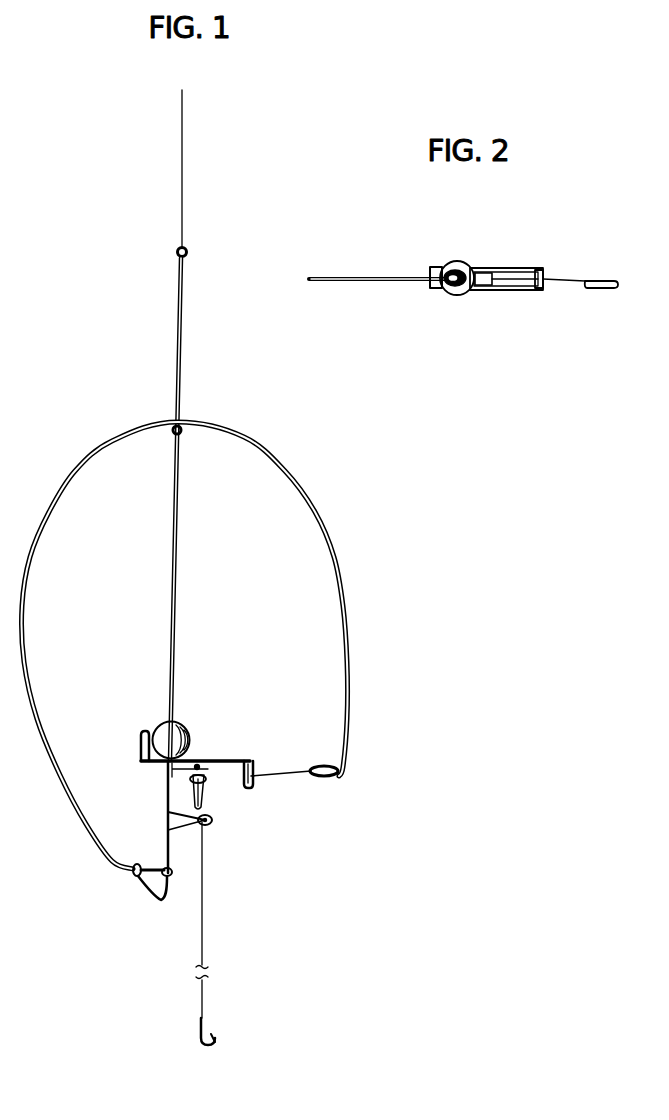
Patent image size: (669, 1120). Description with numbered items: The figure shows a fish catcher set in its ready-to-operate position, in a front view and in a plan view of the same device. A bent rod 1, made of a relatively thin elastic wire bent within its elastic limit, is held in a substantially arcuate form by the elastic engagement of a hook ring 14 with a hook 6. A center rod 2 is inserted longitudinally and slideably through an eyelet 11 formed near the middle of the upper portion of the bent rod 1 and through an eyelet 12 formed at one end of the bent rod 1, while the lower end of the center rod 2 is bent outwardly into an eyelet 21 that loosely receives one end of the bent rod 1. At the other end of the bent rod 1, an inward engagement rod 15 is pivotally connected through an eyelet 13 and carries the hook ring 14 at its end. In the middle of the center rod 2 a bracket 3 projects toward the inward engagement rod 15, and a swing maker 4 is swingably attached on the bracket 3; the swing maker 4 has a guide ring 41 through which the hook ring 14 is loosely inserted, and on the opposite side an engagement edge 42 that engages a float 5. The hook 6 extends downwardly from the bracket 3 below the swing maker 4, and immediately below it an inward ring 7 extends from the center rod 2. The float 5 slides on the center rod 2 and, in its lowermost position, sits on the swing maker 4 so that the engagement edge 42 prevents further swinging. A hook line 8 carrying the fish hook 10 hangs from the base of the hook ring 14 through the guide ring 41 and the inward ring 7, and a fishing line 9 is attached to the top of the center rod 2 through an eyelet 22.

In FIG. 1, the bent rod 1 is at (110, 437).
In FIG. 2, the bent rod 1 is at (360, 282).
In FIG. 1, the center rod 2 is at (172, 523).
In FIG. 1, the bracket 3 is at (182, 775).
In FIG. 2, the bracket 3 is at (494, 290).
In FIG. 1, the swing maker 4 is at (198, 764).
In FIG. 2, the swing maker 4 is at (517, 268).
In FIG. 1, the float 5 is at (160, 725).
In FIG. 2, the float 5 is at (460, 262).
In FIG. 1, the hook 6 is at (192, 793).
In FIG. 1, the inward ring 7 is at (212, 826).
In FIG. 1, the hook line 8 is at (204, 935).
In FIG. 1, the fishing line 9 is at (181, 183).
In FIG. 1, the hook 10 is at (218, 1042).
In FIG. 1, the eyelet 11 is at (183, 435).
In FIG. 2, the eyelet 11 is at (465, 287).
In FIG. 1, the eyelet 12 is at (160, 886).
In FIG. 1, the eyelet 13 is at (339, 777).
In FIG. 2, the eyelet 13 is at (612, 289).
In FIG. 1, the hook ring 14 is at (204, 772).
In FIG. 1, the inward engagement rod 15 is at (284, 771).
In FIG. 2, the inward engagement rod 15 is at (565, 280).
In FIG. 1, the eyelet 21 is at (132, 875).
In FIG. 1, the eyelet 22 is at (188, 256).
In FIG. 2, the eyelet 22 is at (459, 288).
In FIG. 1, the guide ring 41 is at (252, 785).
In FIG. 2, the guide ring 41 is at (545, 291).
In FIG. 1, the engagement edge 42 is at (140, 742).
In FIG. 2, the engagement edge 42 is at (436, 267).